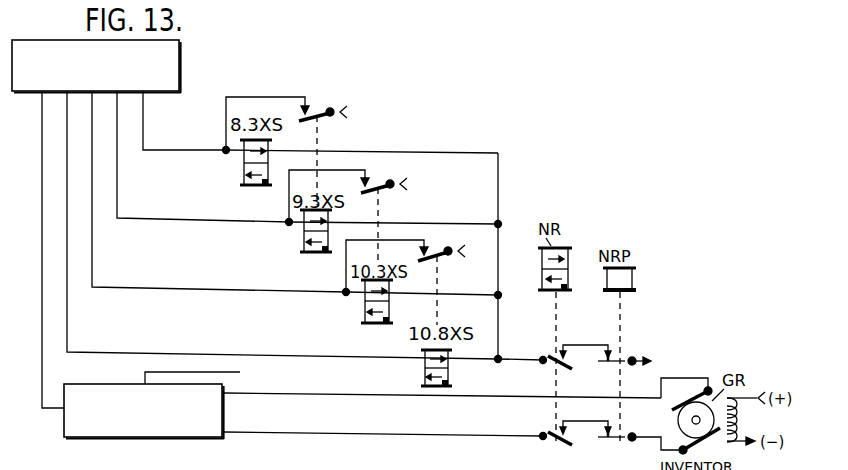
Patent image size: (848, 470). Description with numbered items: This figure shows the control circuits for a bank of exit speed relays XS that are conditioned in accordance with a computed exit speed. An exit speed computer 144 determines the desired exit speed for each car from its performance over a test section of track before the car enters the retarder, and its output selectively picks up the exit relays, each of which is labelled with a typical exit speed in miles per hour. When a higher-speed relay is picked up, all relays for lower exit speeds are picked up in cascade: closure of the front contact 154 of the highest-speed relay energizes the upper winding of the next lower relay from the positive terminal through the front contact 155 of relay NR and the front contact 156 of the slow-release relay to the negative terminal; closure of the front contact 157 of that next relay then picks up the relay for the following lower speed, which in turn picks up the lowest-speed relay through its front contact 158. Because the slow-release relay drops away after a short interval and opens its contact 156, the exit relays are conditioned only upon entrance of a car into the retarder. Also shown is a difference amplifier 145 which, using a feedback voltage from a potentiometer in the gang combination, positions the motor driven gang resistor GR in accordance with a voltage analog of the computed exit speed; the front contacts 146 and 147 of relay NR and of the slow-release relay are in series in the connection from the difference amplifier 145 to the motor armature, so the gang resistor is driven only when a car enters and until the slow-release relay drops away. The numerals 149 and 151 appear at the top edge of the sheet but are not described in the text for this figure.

The exit speed computer 144 is at (182, 62).
The difference amplifier 145 is at (186, 433).
The front contact of relay NR 146 is at (547, 434).
The front contact of relay NRP 147 is at (619, 436).
The front contact of relay 10.8XS 154 is at (419, 282).
The front contact of relay NR 155 is at (547, 362).
The front contact of relay NRP 156 is at (620, 357).
The front contact of relay 10.3XS 157 is at (361, 216).
The front contact of relay 9.3XS 158 is at (300, 151).
The reference numeral (adjacent figure) 149 is at (521, 13).
The reference numeral (adjacent figure) 151 is at (621, 13).